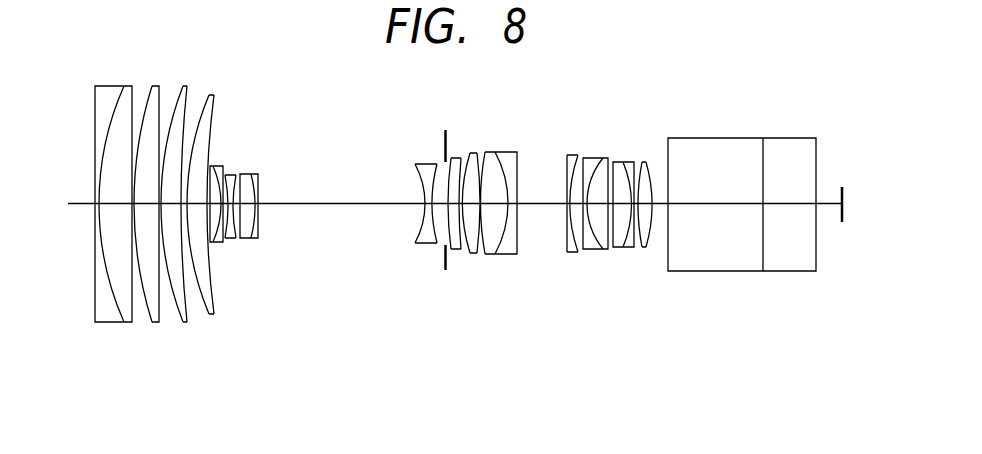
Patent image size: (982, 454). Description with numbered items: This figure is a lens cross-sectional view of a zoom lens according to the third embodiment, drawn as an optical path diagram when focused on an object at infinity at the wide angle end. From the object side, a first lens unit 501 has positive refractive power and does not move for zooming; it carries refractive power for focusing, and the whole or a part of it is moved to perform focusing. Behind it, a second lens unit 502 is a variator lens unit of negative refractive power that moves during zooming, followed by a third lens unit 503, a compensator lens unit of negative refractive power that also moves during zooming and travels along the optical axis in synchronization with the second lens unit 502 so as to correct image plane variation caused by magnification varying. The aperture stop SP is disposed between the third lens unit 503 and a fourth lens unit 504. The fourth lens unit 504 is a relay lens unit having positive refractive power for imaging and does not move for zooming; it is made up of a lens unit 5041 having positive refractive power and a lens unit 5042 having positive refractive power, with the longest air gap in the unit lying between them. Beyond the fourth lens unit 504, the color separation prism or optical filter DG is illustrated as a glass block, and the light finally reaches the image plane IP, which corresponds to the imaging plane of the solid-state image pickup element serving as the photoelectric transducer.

The first lens unit 501 is at (208, 350).
The second lens unit 502 is at (264, 350).
The third lens unit 503 is at (437, 352).
The fourth lens unit 504 is at (553, 281).
The lens unit having positive refractive power 5041 is at (520, 292).
The lens unit having positive refractive power 5042 is at (607, 252).
The aperture stop SP is at (443, 142).
The color separation prism or optical filter DG is at (700, 137).
The image plane IP is at (842, 187).